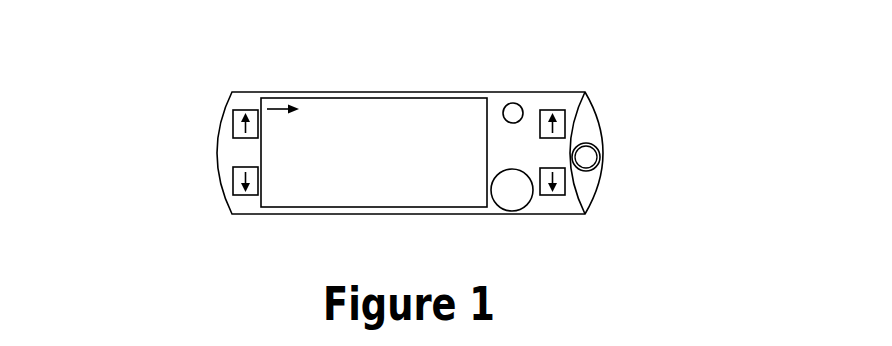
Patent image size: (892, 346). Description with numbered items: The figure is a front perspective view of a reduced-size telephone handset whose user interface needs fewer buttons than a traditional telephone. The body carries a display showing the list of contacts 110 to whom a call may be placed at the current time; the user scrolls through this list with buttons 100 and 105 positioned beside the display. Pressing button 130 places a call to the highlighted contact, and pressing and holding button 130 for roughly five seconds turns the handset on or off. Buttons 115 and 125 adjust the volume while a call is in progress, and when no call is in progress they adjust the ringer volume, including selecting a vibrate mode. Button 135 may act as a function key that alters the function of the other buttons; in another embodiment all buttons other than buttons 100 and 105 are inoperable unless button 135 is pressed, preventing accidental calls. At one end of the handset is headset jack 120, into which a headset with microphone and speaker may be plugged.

The scroll button 100 is at (232, 122).
The scroll button 105 is at (232, 170).
The list of contacts 110 is at (325, 95).
The volume button 115 is at (552, 105).
The headset jack 120 is at (605, 155).
The volume button 125 is at (563, 197).
The call button 130 is at (525, 203).
The function key button 135 is at (505, 102).